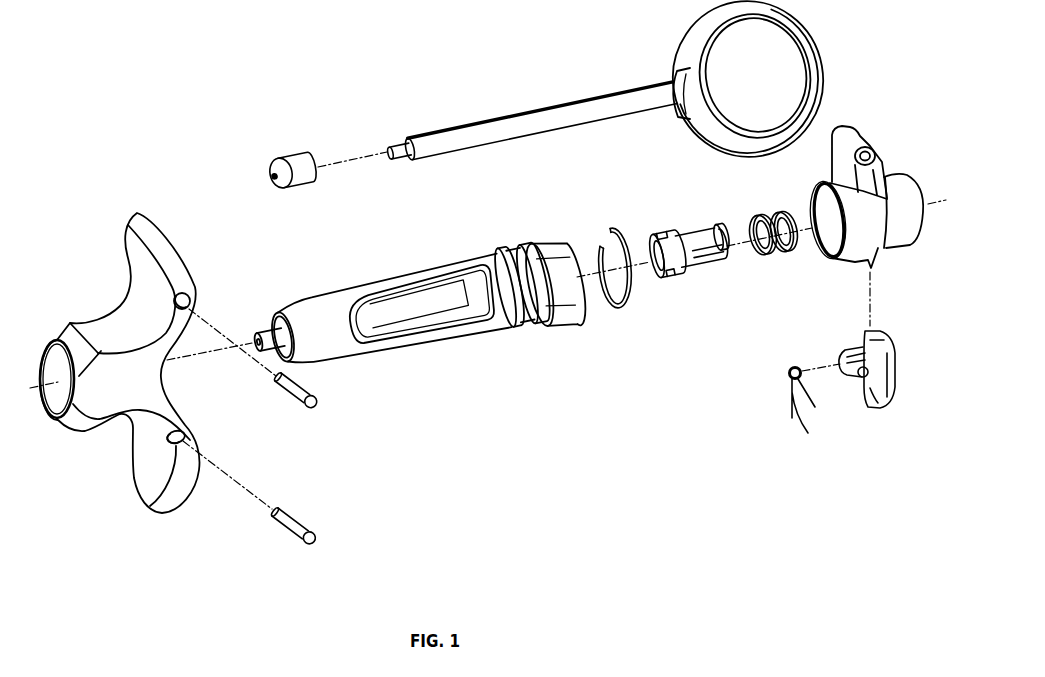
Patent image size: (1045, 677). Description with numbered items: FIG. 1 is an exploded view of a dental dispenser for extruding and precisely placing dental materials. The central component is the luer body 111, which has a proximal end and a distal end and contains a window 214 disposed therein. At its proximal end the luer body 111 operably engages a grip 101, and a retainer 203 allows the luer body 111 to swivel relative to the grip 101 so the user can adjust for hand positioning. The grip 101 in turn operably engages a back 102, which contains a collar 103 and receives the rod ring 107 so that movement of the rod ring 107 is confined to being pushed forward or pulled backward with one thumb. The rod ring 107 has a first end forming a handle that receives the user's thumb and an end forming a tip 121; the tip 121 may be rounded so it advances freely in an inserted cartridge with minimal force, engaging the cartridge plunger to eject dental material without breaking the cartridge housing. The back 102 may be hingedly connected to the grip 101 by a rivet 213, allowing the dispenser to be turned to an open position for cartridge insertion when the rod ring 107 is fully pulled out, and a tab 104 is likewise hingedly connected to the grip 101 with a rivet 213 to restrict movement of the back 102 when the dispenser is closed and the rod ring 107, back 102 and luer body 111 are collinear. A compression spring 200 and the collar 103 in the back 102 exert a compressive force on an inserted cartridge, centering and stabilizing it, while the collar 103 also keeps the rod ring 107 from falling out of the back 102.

The grip 101 is at (135, 478).
The back 102 is at (892, 238).
The collar 103 is at (689, 274).
The tab 104 is at (895, 380).
The rod ring 107 is at (571, 110).
The luer body 111 is at (554, 318).
The tip 121 is at (283, 167).
The compression spring 200 is at (782, 256).
The retainer 203 is at (631, 300).
The rivet 213 is at (287, 394).
The window 214 is at (438, 305).